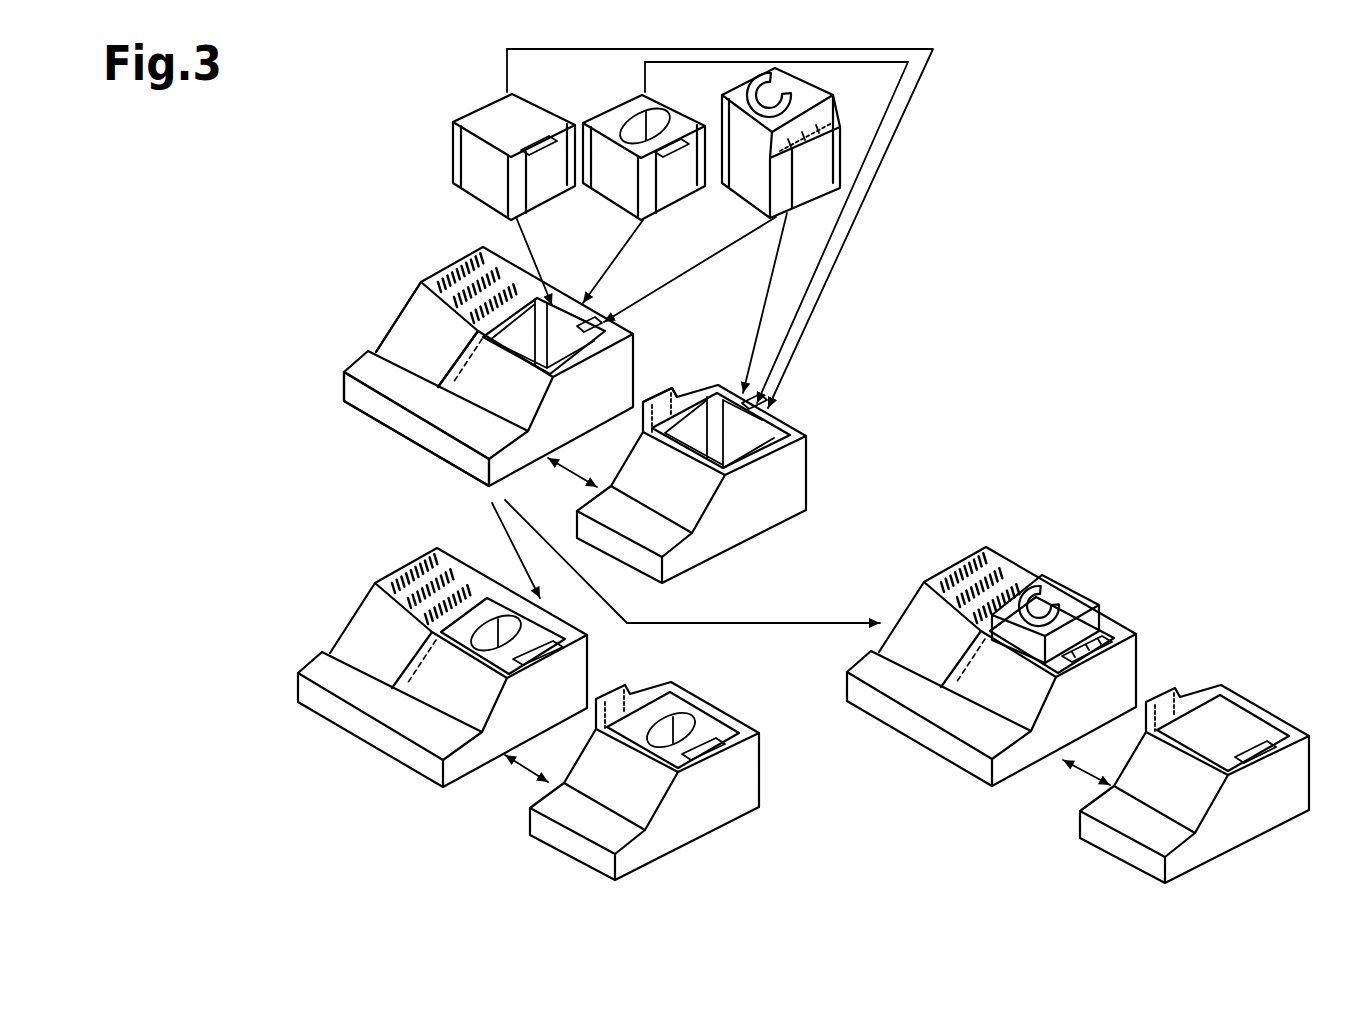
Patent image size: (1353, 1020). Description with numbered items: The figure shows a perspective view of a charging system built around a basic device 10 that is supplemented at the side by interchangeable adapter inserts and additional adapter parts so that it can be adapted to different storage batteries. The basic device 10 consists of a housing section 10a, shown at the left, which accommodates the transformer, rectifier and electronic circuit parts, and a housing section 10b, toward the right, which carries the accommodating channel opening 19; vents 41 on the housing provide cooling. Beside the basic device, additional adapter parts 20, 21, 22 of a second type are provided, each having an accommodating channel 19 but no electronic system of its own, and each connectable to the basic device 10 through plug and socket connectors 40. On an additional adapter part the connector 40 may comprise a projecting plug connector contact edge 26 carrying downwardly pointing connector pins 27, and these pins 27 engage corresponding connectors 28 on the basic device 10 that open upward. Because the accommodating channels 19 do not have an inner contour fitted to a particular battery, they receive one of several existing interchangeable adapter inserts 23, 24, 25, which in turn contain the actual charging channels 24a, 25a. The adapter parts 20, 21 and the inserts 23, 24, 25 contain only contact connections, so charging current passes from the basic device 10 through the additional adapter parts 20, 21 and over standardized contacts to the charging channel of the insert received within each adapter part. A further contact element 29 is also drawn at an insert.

The basic device 10 is at (378, 418).
The housing section 10a is at (408, 322).
The housing section 10b is at (450, 427).
The accommodating channel opening 19 is at (612, 322).
The additional adapter part 20 is at (796, 483).
The additional adapter part 21 is at (1252, 712).
The additional adapter part 22 is at (750, 772).
The interchangeable adapter insert 23 is at (475, 120).
The interchangeable adapter insert 24 is at (620, 117).
The charging channel 24a is at (657, 122).
The interchangeable adapter insert 25 is at (826, 110).
The charging channel 25a is at (778, 83).
The plug connector contact edge 26 is at (678, 394).
The connector pins 27 is at (644, 410).
The connectors 28 is at (686, 146).
The contact pins 29 is at (837, 147).
The plug and socket connectors 40 is at (1185, 687).
The vents 41 is at (442, 278).